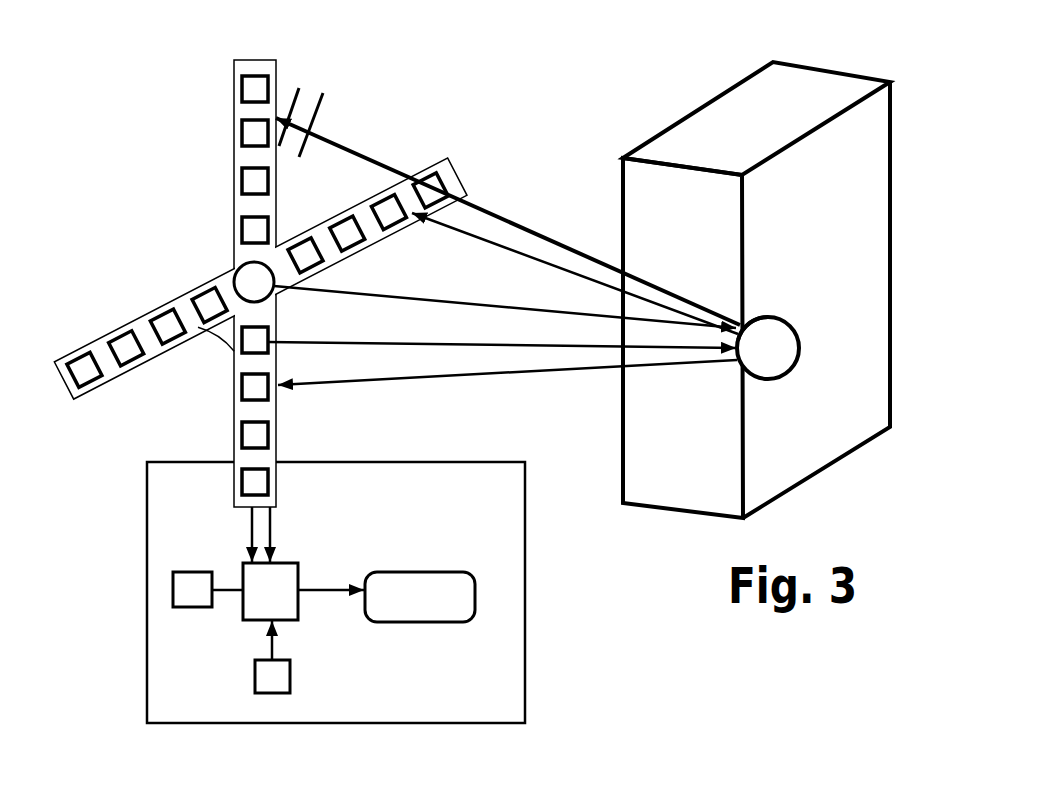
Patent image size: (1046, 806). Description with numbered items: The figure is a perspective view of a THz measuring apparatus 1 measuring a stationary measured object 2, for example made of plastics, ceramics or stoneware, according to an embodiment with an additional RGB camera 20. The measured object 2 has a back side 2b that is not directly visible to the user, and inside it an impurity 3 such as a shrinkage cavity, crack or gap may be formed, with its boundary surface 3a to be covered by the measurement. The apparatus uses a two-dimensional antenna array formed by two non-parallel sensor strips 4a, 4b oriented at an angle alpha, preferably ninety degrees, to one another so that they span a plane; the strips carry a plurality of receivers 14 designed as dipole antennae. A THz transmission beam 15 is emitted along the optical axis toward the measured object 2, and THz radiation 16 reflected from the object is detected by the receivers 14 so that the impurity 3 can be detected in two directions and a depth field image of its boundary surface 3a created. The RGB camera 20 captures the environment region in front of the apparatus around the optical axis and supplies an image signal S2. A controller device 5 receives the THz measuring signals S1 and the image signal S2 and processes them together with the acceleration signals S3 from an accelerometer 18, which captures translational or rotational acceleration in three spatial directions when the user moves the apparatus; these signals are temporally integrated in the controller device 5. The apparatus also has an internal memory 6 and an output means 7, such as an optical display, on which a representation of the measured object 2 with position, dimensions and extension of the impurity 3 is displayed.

The THz measuring apparatus 1 is at (525, 718).
The measured object 2 is at (813, 78).
The back side 2b is at (872, 228).
The impurity 3 is at (788, 316).
The boundary surface of the impurity 3a is at (753, 317).
The sensor strip 4a is at (271, 60).
The sensor strip 4b is at (457, 177).
The controller device 5 is at (293, 572).
The internal memory 6 is at (195, 602).
The output means 7 is at (445, 612).
The receiver 14 is at (250, 128).
The THz transmission beam 15 is at (430, 347).
The reflected THz radiation 16 is at (555, 370).
The accelerometer 18 is at (287, 677).
The RGB camera 20 is at (236, 267).
The THz measuring signals S1 is at (250, 528).
The image signal S2 is at (268, 523).
The acceleration signals S3 is at (272, 652).
The angle alpha is at (218, 338).